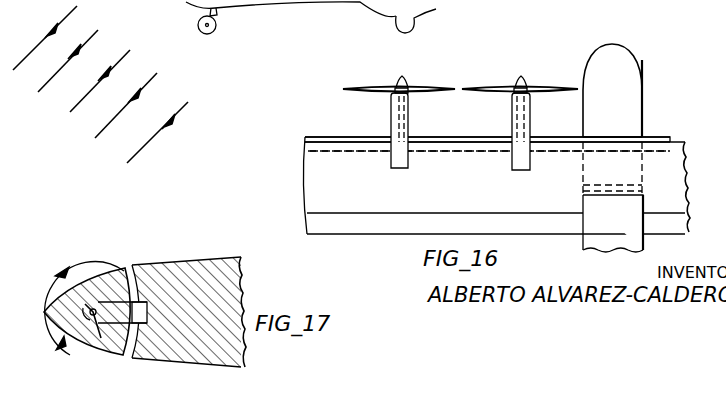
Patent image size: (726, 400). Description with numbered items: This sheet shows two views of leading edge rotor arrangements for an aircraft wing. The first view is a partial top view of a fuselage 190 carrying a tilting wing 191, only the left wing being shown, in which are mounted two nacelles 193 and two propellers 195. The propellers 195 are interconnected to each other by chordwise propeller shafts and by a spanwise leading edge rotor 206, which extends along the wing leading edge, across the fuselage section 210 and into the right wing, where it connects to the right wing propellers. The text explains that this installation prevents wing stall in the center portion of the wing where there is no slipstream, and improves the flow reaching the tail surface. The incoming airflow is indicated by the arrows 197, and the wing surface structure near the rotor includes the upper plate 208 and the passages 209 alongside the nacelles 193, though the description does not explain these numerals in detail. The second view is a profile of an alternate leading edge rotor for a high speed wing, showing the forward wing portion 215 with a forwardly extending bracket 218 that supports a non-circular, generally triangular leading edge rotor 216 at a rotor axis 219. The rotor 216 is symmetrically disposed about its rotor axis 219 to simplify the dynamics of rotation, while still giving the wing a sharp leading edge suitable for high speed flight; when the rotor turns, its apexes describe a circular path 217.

In FIG. 16, the fuselage 190 is at (635, 77).
In FIG. 16, the tilting wing 191 is at (303, 188).
In FIG. 16, the nacelle 193 is at (410, 113).
In FIG. 16, the propeller 195 is at (485, 83).
In FIG. 16, the airflow arrows 197 is at (122, 108).
In FIG. 16, the leading edge rotor 206 is at (312, 137).
In FIG. 16, the upper wing plate 208 is at (347, 141).
In FIG. 16, the nacelle passage 209 is at (398, 115).
In FIG. 16, the fuselage section 210 is at (622, 135).
In FIG. 17, the wing portion 215 is at (203, 265).
In FIG. 17, the leading edge rotor 216 is at (90, 273).
In FIG. 17, the circular path 217 is at (53, 283).
In FIG. 17, the bracket 218 is at (134, 267).
In FIG. 17, the rotor axis 219 is at (99, 330).